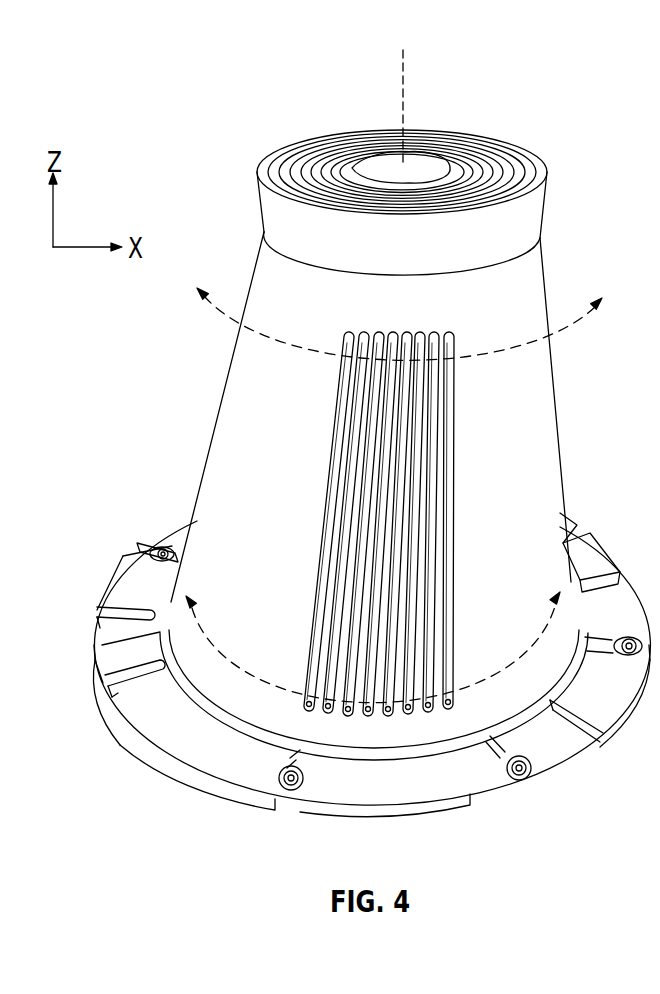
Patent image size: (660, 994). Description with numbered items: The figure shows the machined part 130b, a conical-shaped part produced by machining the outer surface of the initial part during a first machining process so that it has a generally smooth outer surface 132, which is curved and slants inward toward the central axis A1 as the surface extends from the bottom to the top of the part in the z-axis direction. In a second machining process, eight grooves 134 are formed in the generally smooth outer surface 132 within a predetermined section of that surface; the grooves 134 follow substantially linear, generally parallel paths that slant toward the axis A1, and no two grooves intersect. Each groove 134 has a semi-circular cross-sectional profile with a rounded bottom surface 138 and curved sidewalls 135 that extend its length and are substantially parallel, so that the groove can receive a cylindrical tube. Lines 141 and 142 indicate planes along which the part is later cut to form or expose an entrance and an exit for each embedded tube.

The central axis A1 is at (403, 72).
The machined part 130b is at (467, 124).
The generally smooth outer surface 132 is at (243, 366).
The grooves 134 is at (297, 605).
The sidewalls 135 is at (335, 504).
The rounded bottom surface 138 is at (328, 540).
The cutting plane line 141 is at (314, 341).
The cutting plane line 142 is at (241, 658).